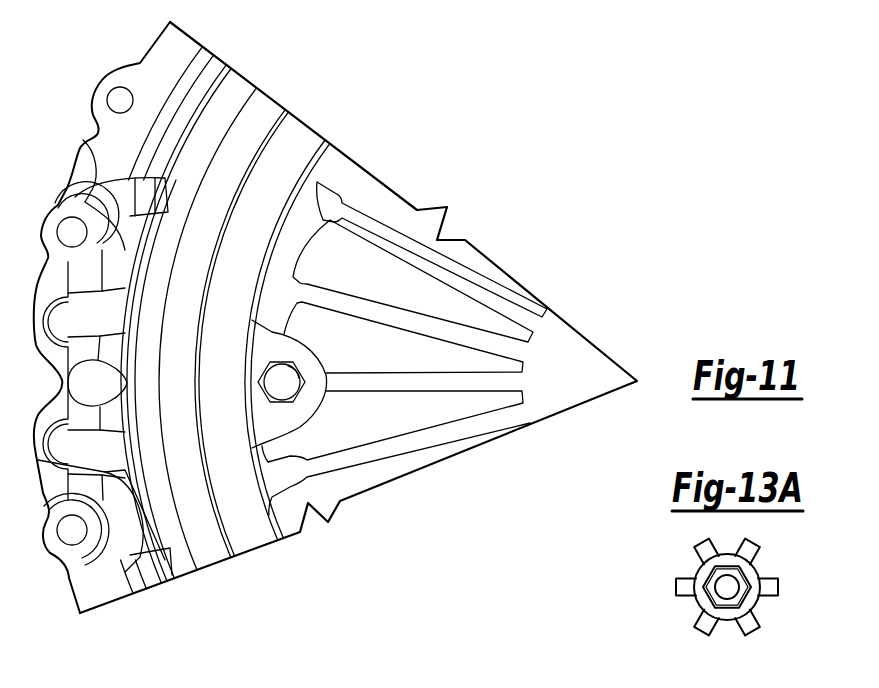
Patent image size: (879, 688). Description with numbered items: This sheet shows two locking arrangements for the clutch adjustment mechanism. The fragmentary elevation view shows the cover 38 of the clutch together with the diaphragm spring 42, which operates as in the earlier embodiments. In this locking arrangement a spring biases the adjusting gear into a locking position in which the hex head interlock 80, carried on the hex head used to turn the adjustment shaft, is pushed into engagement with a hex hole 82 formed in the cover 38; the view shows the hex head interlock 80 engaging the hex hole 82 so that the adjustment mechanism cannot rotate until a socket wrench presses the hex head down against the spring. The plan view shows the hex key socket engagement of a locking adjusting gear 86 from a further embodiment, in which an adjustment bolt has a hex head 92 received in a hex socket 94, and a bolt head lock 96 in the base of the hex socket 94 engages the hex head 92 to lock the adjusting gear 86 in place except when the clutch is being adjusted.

In FIG. 11, the cover 38 is at (303, 142).
In FIG. 11, the diaphragm spring 42 is at (363, 431).
In FIG. 11, the hex head interlock 80 is at (300, 378).
In FIG. 11, the hex hole 82 is at (264, 392).
In FIG. 13A, the locking adjusting gear 86 is at (777, 585).
In FIG. 13A, the hex head 92 is at (720, 575).
In FIG. 13A, the hex socket 94 is at (726, 621).
In FIG. 13A, the bolt head lock 96 is at (728, 610).